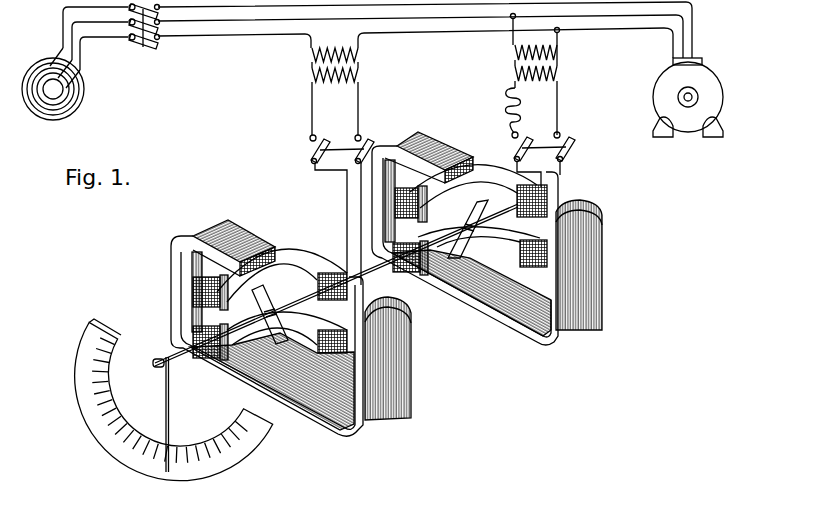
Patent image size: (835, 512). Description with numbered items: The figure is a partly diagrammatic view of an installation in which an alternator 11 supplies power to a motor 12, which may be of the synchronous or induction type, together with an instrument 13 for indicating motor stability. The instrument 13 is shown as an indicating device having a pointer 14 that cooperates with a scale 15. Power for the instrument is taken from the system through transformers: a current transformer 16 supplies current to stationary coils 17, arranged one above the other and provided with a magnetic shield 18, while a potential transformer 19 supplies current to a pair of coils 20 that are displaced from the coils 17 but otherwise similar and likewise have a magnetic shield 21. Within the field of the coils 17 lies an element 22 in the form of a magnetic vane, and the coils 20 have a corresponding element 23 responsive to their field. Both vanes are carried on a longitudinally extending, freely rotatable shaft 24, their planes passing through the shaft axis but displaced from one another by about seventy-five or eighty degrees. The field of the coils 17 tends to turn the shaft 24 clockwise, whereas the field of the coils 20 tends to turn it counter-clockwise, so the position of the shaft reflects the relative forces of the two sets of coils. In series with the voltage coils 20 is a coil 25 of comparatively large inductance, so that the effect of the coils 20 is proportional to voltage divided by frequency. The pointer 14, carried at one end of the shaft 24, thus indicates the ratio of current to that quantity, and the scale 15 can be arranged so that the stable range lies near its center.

The alternator 11 is at (82, 97).
The motor 12 is at (702, 75).
The instrument 13 is at (465, 248).
The pointer 14 is at (170, 410).
The scale 15 is at (203, 478).
The current transformer 16 is at (359, 67).
The stationary coils 17 is at (298, 258).
The magnetic shield 18 is at (407, 390).
The potential transformer 19 is at (558, 62).
The pair of coils 20 is at (482, 162).
The magnetic shield 21 is at (604, 267).
The element 22 is at (265, 297).
The element 23 is at (453, 262).
The shaft 24 is at (185, 358).
The coil 25 is at (507, 100).